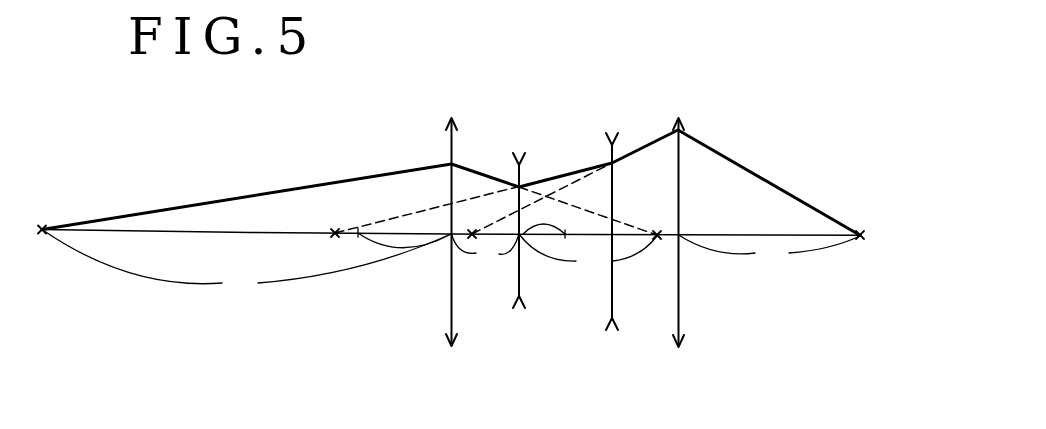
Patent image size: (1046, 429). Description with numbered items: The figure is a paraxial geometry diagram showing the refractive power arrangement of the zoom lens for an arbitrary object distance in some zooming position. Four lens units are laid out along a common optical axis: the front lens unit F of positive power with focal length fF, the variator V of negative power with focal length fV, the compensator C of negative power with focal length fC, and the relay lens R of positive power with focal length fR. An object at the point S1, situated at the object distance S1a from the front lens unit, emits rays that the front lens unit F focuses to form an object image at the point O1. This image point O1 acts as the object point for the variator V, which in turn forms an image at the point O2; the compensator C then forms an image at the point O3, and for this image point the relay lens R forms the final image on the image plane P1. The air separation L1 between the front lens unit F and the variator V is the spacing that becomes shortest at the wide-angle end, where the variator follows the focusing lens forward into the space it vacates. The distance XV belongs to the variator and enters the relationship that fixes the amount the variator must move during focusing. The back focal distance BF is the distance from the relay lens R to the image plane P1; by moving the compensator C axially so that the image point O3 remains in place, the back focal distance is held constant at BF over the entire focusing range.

The front lens unit F is at (452, 190).
The variator V is at (521, 171).
The compensator C is at (612, 182).
The relay lens R is at (680, 191).
The focal length of the front lens unit fF is at (383, 248).
The focal length of the variator fV is at (538, 222).
The focal length of the compensator fC is at (612, 101).
The focal length of the relay lens fR is at (678, 101).
The object point S1 is at (45, 211).
The object distance S1a is at (246, 267).
The image point of the front lens unit O1 is at (658, 216).
The image point of the variator O2 is at (335, 213).
The image point of the compensator O3 is at (472, 232).
The air separation L1 is at (486, 254).
The variator object distance XV is at (588, 256).
The back focal distance BF is at (770, 251).
The image plane P1 is at (873, 237).